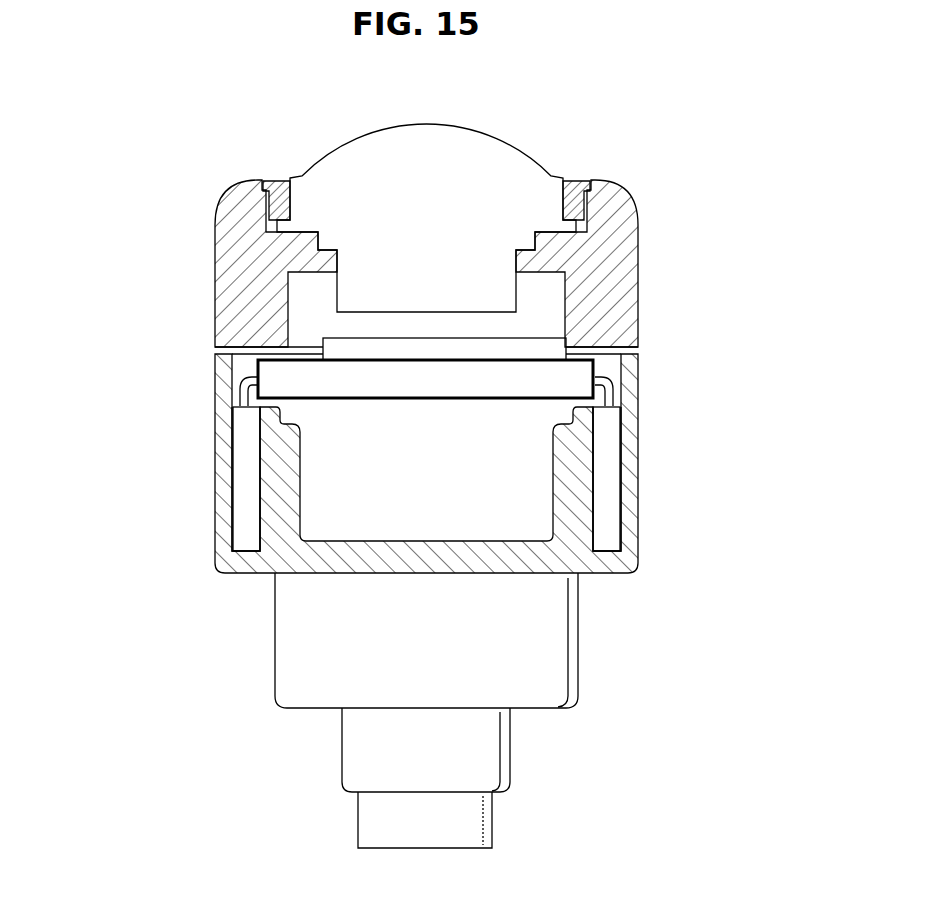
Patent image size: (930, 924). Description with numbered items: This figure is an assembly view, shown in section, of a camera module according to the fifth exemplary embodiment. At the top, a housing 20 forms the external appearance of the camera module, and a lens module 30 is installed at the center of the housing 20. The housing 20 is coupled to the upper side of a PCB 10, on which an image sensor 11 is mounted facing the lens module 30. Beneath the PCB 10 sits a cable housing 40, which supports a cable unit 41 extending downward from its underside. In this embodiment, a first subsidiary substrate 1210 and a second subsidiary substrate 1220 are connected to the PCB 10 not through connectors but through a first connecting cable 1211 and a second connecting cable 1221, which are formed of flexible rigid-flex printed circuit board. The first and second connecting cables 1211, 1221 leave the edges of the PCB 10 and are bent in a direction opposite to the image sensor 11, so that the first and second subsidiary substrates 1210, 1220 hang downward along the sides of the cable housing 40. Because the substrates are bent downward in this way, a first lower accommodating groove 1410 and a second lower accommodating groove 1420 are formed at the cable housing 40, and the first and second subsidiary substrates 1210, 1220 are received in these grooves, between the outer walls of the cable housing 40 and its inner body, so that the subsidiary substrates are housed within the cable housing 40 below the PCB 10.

The PCB 10 is at (590, 364).
The image sensor 11 is at (522, 342).
The housing 20 is at (628, 208).
The lens module 30 is at (498, 148).
The cable housing 40 is at (623, 567).
The cable unit 41 is at (354, 744).
The first subsidiary substrate 1210 is at (235, 452).
The first connecting cable 1211 is at (248, 400).
The second subsidiary substrate 1220 is at (623, 440).
The second connecting cable 1221 is at (606, 399).
The first lower accommodating groove 1410 is at (235, 501).
The second lower accommodating groove 1420 is at (623, 500).